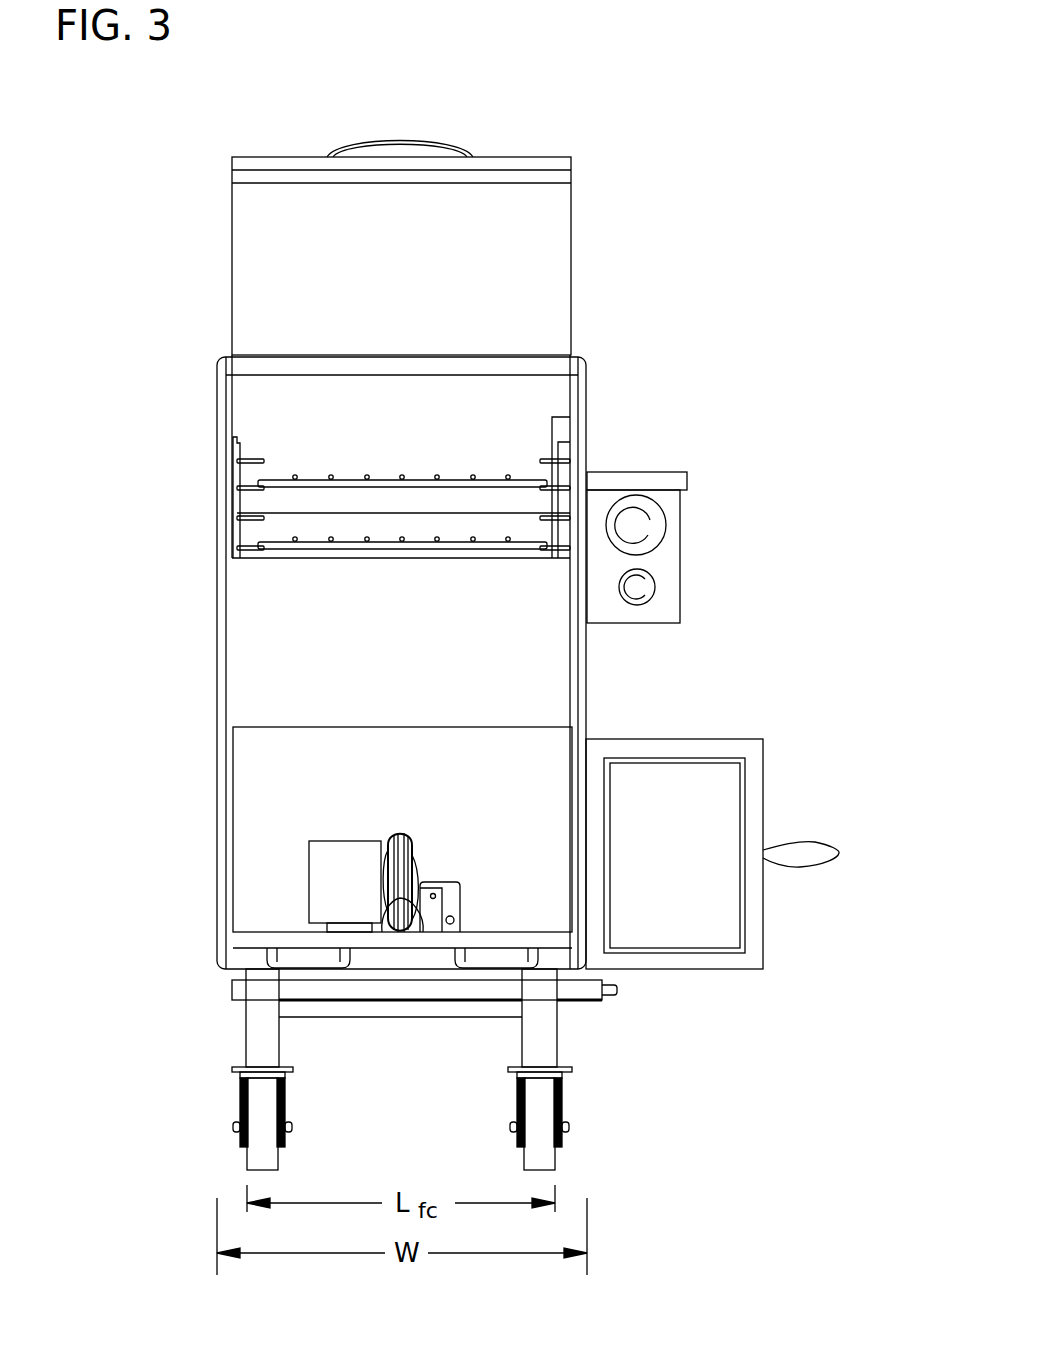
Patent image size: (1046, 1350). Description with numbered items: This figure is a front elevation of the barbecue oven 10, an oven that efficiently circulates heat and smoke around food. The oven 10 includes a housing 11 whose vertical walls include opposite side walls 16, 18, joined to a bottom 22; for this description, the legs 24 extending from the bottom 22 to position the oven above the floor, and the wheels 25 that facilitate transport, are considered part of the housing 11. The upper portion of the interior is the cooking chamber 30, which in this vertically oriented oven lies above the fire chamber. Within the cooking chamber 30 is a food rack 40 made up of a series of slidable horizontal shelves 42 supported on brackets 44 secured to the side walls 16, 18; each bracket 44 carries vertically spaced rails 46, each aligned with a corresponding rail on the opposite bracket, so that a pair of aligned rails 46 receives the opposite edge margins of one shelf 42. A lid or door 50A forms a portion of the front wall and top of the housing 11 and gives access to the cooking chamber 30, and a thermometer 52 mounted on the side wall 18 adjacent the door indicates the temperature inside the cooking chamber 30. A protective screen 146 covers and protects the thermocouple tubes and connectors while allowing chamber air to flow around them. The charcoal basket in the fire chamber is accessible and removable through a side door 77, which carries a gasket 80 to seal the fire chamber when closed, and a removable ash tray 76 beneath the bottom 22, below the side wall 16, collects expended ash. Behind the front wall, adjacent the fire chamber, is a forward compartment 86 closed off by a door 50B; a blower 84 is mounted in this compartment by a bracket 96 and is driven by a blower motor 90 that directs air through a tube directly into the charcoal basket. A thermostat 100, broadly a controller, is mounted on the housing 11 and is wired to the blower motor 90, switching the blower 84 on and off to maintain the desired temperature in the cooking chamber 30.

The barbecue oven 10 is at (678, 110).
The housing 11 is at (215, 595).
The side wall 16 is at (587, 668).
The side wall 18 is at (218, 733).
The bottom 22 is at (403, 973).
The legs 24 is at (263, 1024).
The wheels 25 is at (253, 1103).
The cooking chamber 30 is at (490, 408).
The food rack 40 is at (328, 552).
The shelves 42 is at (382, 480).
The brackets 44 is at (237, 450).
The rails 46 is at (240, 540).
The door 50A is at (270, 164).
The door 50B is at (241, 944).
The thermometer 52 is at (636, 528).
The ash tray 76 is at (583, 993).
The side door 77 is at (743, 743).
The gasket 80 is at (702, 948).
The blower 84 is at (402, 833).
The forward compartment 86 is at (495, 884).
The blower motor 90 is at (327, 888).
The bracket 96 is at (328, 927).
The thermostat 100 is at (637, 590).
The protective screen 146 is at (565, 429).